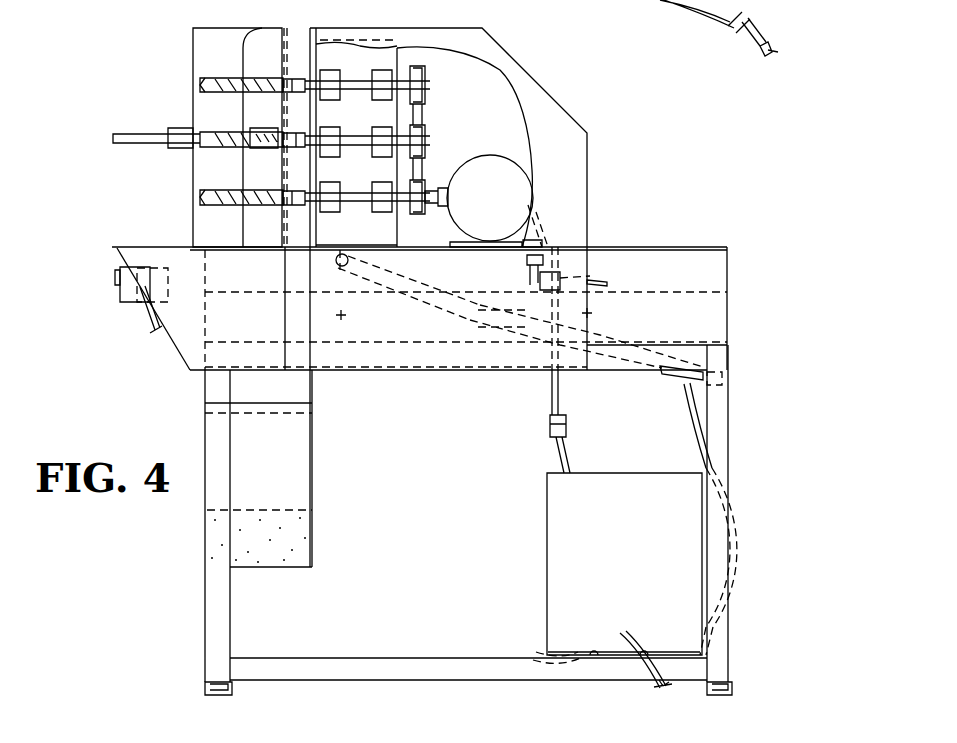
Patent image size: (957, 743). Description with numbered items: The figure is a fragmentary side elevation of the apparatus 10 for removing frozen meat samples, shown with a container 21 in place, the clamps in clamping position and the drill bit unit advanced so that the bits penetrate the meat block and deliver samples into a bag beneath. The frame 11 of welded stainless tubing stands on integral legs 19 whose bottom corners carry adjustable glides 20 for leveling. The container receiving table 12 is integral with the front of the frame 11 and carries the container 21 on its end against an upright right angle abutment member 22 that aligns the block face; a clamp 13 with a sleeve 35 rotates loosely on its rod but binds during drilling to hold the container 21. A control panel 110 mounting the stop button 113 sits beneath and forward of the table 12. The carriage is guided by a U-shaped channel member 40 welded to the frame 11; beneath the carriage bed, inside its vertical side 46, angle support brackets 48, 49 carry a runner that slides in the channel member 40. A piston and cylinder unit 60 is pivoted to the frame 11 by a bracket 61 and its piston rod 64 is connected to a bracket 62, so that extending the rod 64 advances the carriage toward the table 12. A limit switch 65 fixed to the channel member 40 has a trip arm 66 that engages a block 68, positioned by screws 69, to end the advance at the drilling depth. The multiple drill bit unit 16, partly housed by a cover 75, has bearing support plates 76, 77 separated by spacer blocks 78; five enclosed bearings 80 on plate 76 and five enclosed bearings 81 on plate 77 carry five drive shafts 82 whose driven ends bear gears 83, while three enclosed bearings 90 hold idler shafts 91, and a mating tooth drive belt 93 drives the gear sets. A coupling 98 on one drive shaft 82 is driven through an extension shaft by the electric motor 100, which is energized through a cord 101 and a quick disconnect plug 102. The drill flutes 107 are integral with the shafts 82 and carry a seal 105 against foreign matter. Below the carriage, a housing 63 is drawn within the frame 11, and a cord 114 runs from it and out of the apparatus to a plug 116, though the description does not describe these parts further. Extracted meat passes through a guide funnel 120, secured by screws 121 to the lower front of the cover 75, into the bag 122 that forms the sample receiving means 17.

The apparatus 10 is at (616, 93).
The frame 11 is at (737, 424).
The container receiving table 12 is at (140, 239).
The clamp 13 is at (164, 158).
The multiple drill bit unit 16 is at (365, 57).
The sample receiving means 17 is at (323, 413).
The legs 19 is at (210, 618).
The adjustable glides 20 is at (206, 690).
The container 21 is at (198, 52).
The upright right angle abutment member 22 is at (262, 36).
The sleeve 35 is at (176, 132).
The channel member 40 is at (694, 300).
The vertical side 46 is at (585, 268).
The angle support bracket 48 is at (350, 316).
The angle support bracket 49 is at (596, 312).
The piston and cylinder unit 60 is at (666, 372).
The bracket 61 is at (725, 382).
The bracket 62 is at (356, 263).
The control box 63 is at (556, 540).
The piston rod 64 is at (478, 308).
The limit switch 65 is at (538, 282).
The trip arm 66 is at (524, 260).
The block 68 is at (546, 238).
The screws 69 is at (536, 216).
The cover 75 is at (538, 82).
The bearing support plate 76 is at (318, 113).
The bearing support plate 77 is at (396, 114).
The spacer blocks 78 is at (372, 34).
The enclosed bearings 80 is at (350, 62).
The enclosed bearings 81 is at (382, 72).
The drive shafts 82 is at (428, 86).
The gears 83 is at (418, 70).
The enclosed bearings 90 is at (376, 162).
The idler shafts 91 is at (424, 150).
The drive belt 93 is at (420, 125).
The coupling 98 is at (442, 194).
The electric motor 100 is at (482, 170).
The cord 101 is at (550, 392).
The quick disconnect plug 102 is at (568, 428).
The seal 105 is at (295, 90).
The drill flutes 107 is at (206, 85).
The control panel 110 is at (125, 300).
The stop button 113 is at (116, 280).
The power cord 114 is at (692, 4).
The plug 116 is at (776, 44).
The guide funnel 120 is at (312, 390).
The screws 121 is at (300, 248).
The bag 122 is at (314, 450).